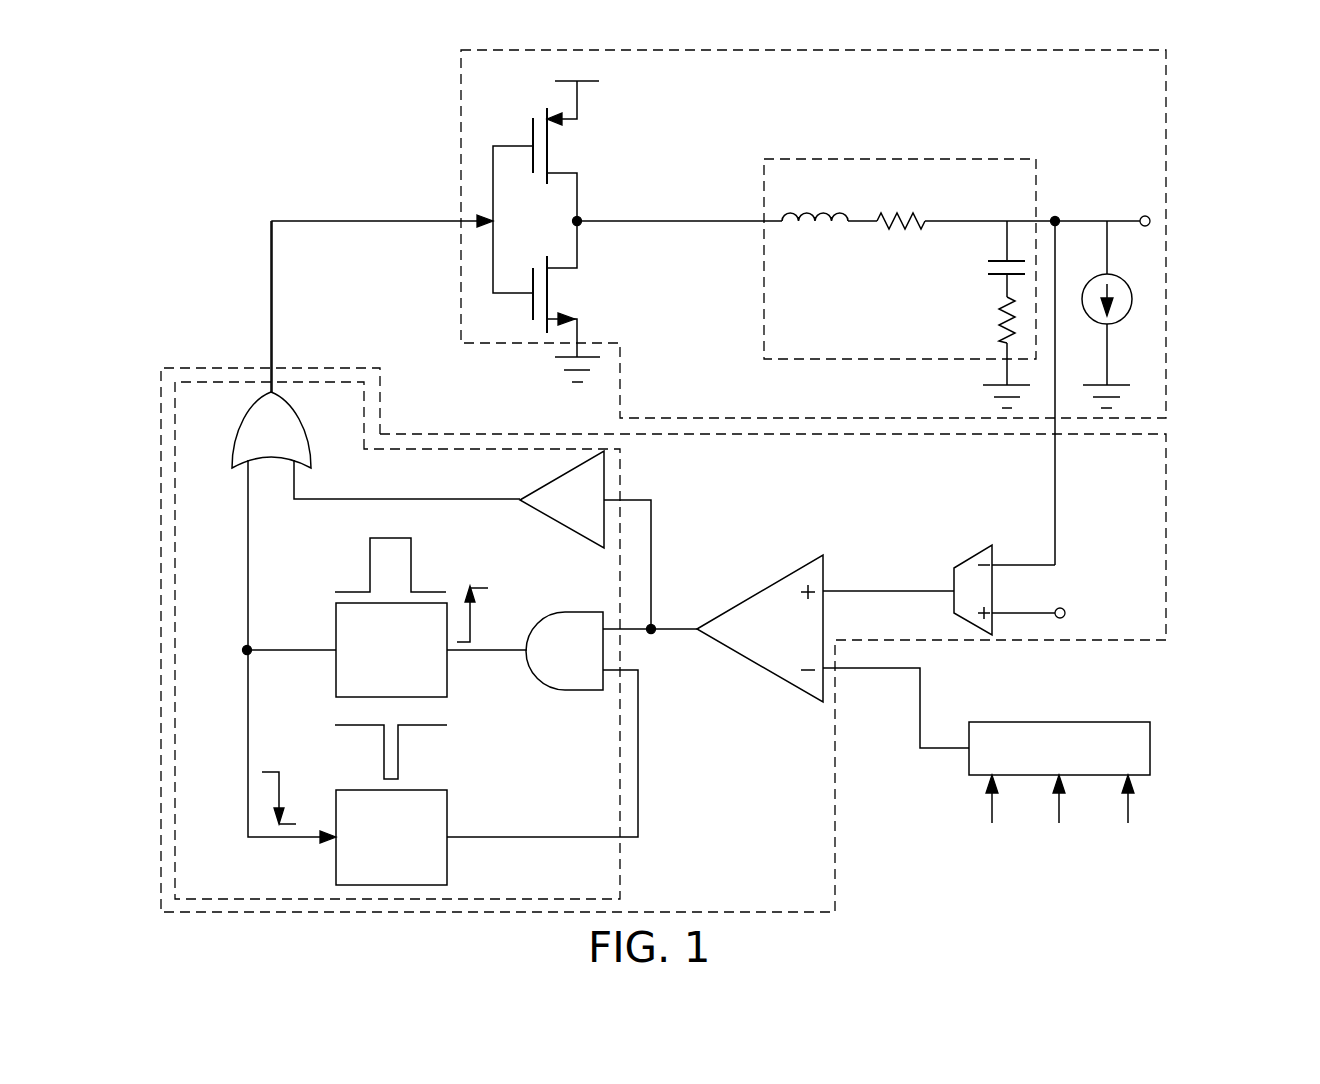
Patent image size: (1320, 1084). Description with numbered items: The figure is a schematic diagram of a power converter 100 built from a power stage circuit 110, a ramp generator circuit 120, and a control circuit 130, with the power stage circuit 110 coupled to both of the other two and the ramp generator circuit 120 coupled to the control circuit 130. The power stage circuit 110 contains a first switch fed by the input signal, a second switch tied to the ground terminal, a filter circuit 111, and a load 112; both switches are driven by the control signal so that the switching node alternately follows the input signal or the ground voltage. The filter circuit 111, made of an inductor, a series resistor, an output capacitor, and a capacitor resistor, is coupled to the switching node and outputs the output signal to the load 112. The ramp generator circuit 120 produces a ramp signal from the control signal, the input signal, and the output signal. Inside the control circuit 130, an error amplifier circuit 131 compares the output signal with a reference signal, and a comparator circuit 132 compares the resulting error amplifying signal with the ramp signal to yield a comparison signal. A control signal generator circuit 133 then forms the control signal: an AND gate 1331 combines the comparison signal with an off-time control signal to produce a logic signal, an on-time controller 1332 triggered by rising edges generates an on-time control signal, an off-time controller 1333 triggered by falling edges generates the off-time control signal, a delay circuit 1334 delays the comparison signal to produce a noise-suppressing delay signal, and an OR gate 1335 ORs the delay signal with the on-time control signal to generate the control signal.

The power converter 100 is at (1319, 69).
The power stage circuit 110 is at (461, 115).
The filter circuit 111 is at (764, 252).
The load 112 is at (1121, 276).
The ramp generator circuit 120 is at (1082, 767).
The control circuit 130 is at (1166, 497).
The error amplifier circuit 131 is at (990, 550).
The comparator circuit 132 is at (806, 564).
The control signal generator circuit 133 is at (175, 478).
The AND gate 1331 is at (597, 663).
The on-time controller 1332 is at (420, 663).
The off-time controller 1333 is at (420, 850).
The delay circuit 1334 is at (603, 512).
The OR gate 1335 is at (300, 445).